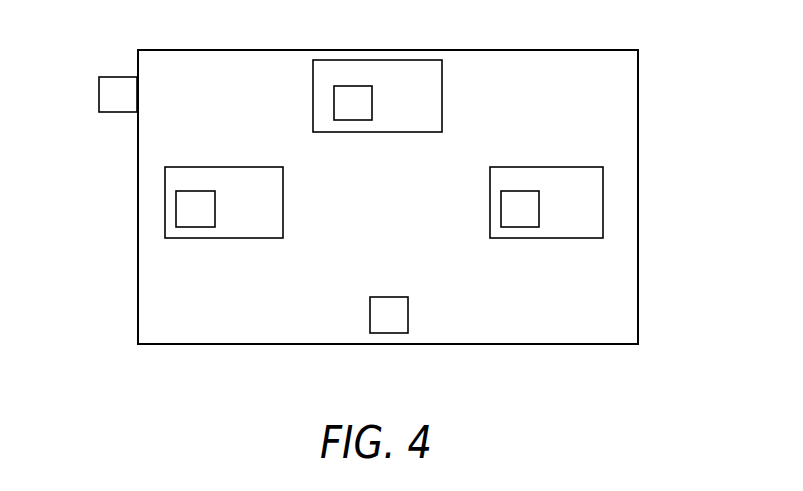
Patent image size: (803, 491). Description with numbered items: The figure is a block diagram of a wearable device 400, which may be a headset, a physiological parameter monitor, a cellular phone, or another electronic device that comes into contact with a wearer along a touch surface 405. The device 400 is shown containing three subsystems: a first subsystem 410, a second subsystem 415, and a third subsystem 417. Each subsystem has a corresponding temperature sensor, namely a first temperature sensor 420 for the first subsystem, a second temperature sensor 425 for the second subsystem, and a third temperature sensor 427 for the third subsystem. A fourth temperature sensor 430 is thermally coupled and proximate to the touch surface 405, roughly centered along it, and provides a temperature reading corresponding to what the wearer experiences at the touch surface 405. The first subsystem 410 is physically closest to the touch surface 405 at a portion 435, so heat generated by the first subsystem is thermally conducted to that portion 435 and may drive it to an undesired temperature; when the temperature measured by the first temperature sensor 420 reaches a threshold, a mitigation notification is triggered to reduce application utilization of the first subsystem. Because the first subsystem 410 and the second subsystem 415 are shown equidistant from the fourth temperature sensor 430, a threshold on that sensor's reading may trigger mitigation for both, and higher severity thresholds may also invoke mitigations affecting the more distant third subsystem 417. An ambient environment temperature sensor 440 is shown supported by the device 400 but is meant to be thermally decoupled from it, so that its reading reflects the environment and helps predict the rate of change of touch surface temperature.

The wearable device 400 is at (639, 173).
The touch surface 405 is at (573, 345).
The subsystem S1 410 is at (240, 167).
The subsystem S2 415 is at (572, 167).
The subsystem S3 417 is at (395, 60).
The temperature sensor T1 420 is at (193, 227).
The temperature sensor T2 425 is at (523, 227).
The temperature sensor T3 427 is at (352, 120).
The temperature sensor T4 430 is at (395, 297).
The portion of touch surface 435 is at (272, 344).
The ambient environment temperature sensor T5 440 is at (117, 113).